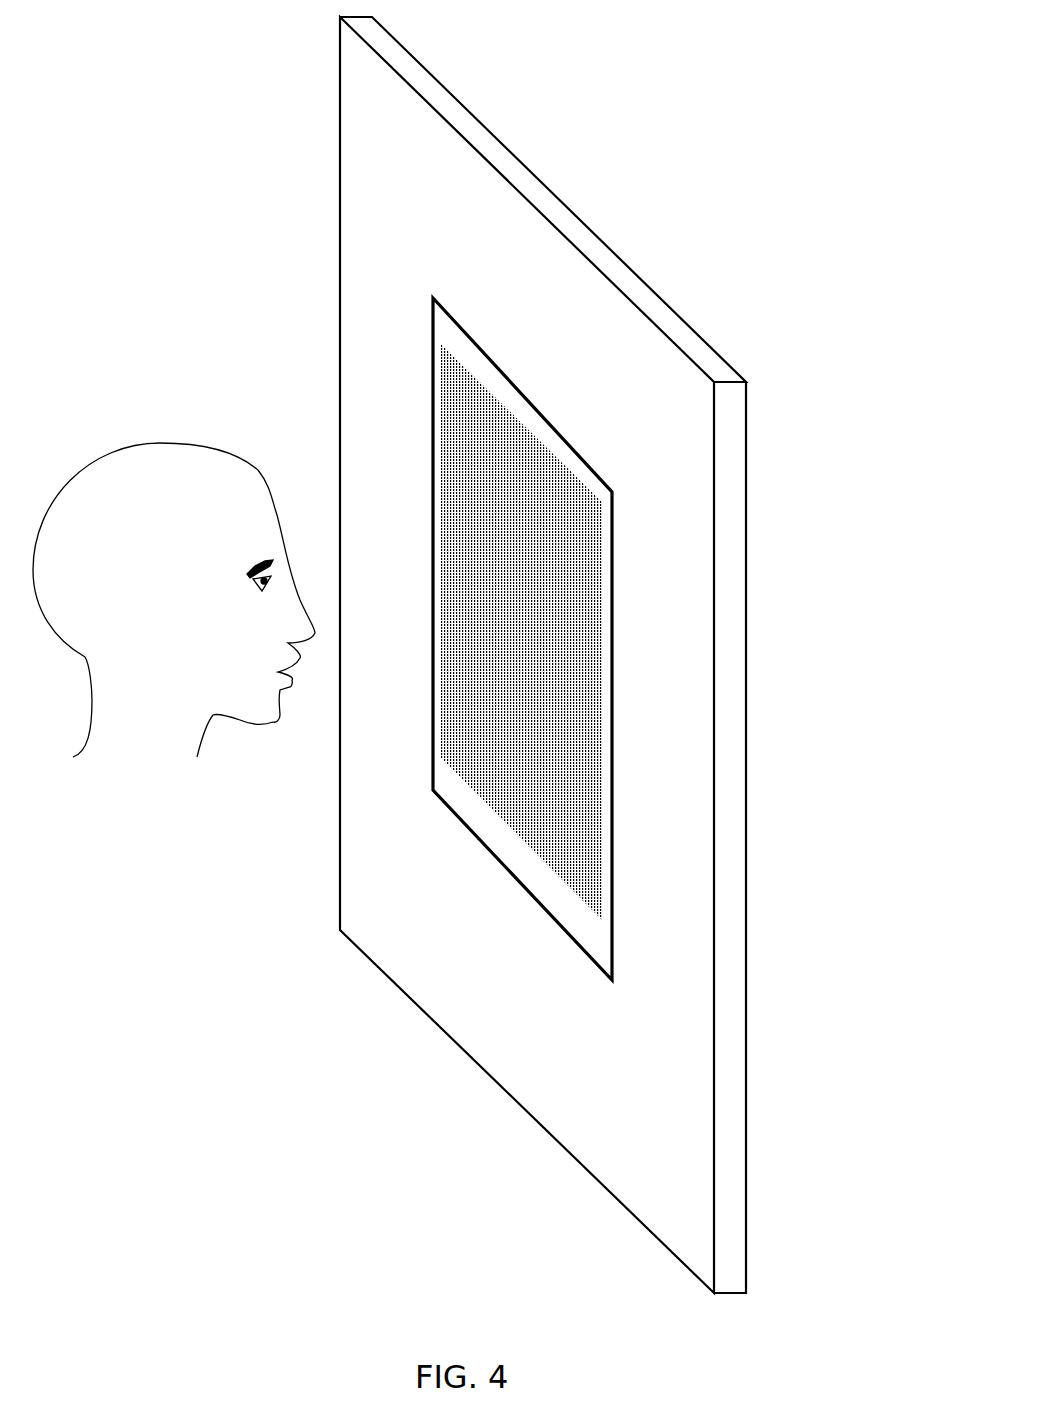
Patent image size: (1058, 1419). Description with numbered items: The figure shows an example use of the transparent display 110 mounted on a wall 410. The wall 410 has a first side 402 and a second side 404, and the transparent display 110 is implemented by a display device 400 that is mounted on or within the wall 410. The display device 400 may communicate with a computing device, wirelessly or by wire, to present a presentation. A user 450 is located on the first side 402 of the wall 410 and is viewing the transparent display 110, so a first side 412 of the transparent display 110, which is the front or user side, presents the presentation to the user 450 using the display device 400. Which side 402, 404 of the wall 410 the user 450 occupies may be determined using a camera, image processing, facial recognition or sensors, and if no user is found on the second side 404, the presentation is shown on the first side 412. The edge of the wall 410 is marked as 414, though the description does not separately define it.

The first side 402 is at (185, 127).
The wall 410 is at (330, 62).
The second side 404 is at (823, 398).
The side edge of panel 414 is at (788, 637).
The display device 400 is at (433, 327).
The first side 412 is at (418, 773).
The transparent display 110 is at (457, 455).
The user 450 is at (128, 417).